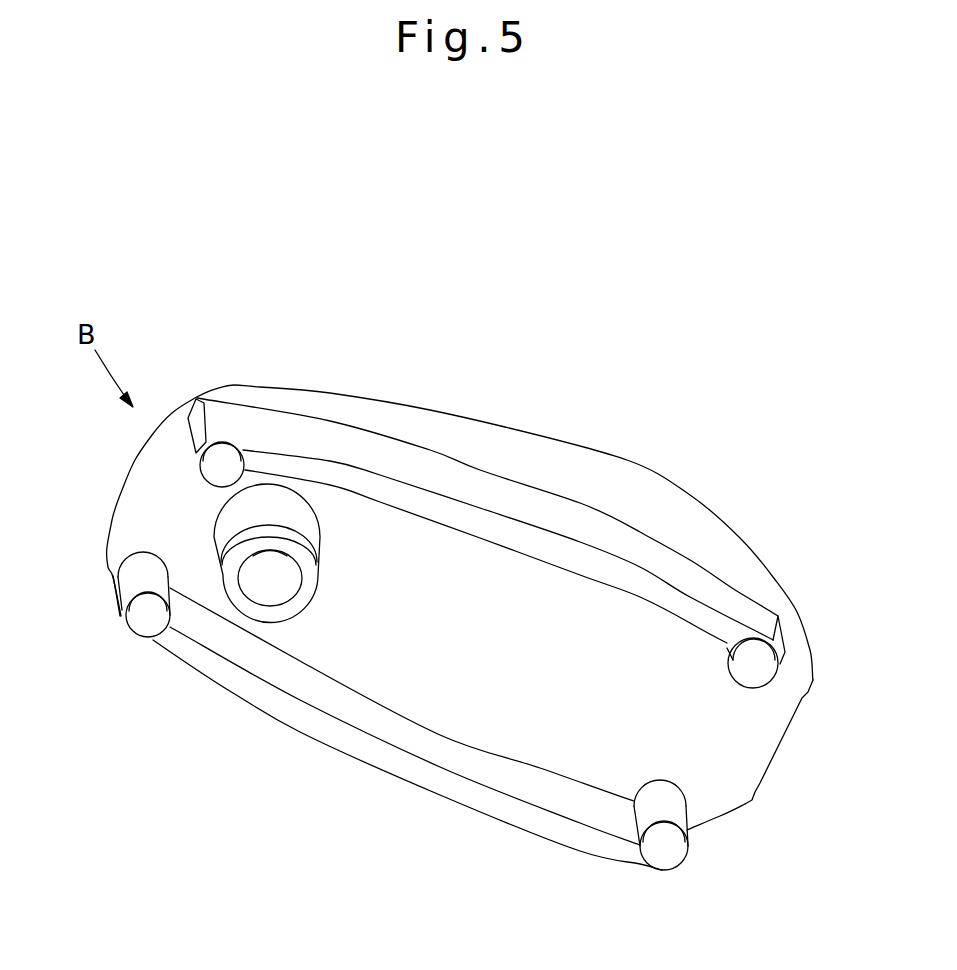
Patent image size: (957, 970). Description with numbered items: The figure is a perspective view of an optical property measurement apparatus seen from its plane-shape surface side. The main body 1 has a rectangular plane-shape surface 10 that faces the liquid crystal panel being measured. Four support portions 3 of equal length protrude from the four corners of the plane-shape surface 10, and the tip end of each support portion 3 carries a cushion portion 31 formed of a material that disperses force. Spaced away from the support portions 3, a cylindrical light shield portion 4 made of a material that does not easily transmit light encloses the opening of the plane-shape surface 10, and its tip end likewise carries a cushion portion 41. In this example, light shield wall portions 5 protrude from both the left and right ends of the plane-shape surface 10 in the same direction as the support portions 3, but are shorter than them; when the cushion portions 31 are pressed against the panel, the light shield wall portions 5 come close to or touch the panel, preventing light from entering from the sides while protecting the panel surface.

The main body 1 is at (612, 477).
The support portion 3 is at (137, 578).
The light shield portion 4 is at (291, 505).
The light shield wall portion 5 is at (610, 568).
The plane-shape surface 10 is at (417, 550).
The cushion portion 31 is at (228, 463).
The cushion portion 41 is at (256, 607).